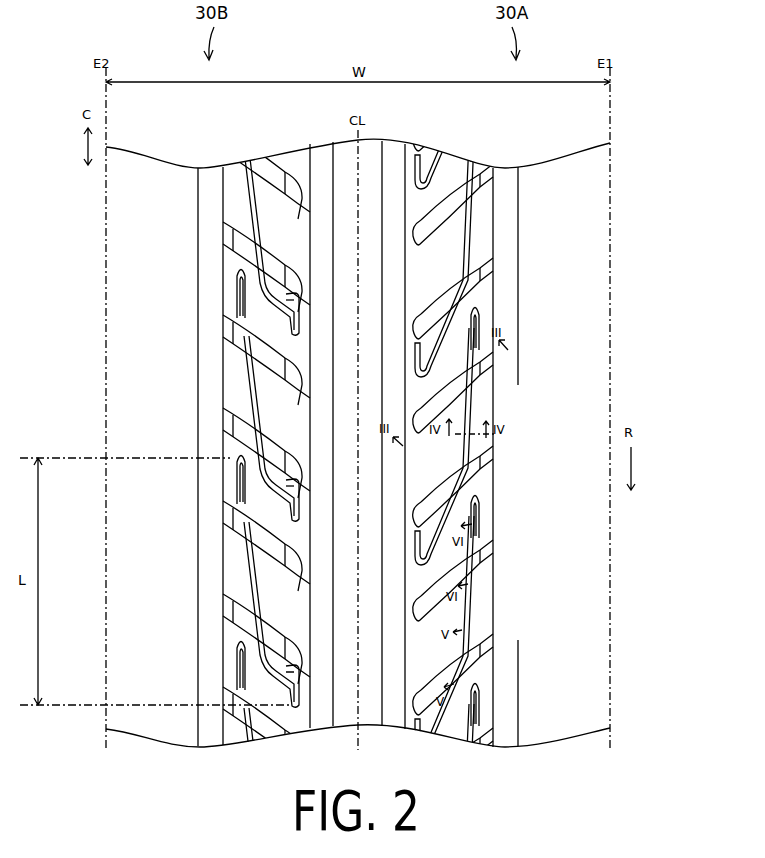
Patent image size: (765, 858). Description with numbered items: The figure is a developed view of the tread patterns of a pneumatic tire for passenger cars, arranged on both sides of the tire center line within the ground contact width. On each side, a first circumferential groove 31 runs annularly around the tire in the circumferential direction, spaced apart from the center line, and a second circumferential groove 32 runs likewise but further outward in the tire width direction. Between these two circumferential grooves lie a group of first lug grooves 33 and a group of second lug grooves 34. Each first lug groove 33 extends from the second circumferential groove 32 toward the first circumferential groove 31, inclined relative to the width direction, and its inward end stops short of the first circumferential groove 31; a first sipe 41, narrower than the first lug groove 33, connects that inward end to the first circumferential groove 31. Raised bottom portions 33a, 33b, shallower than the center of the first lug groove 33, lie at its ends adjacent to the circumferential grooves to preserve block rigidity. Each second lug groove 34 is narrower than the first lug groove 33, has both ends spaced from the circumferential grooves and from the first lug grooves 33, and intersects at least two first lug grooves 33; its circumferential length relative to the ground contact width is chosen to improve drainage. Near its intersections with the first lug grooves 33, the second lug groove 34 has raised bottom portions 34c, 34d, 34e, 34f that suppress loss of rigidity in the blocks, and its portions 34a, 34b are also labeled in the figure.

The first circumferential groove 31 is at (325, 253).
The second circumferential groove 32 is at (215, 197).
The first lug groove 33 is at (405, 280).
The raised bottom portion 33a is at (415, 430).
The raised bottom portion 33b is at (480, 361).
The second lug groove 34 is at (496, 440).
The lug groove first portion 34a is at (405, 468).
The lug groove second portion 34b is at (497, 427).
The raised bottom portion 34c is at (463, 673).
The raised bottom portion 34d is at (468, 641).
The raised bottom portion 34e is at (477, 568).
The raised bottom portion 34f is at (477, 543).
The first sipe 41 is at (310, 410).